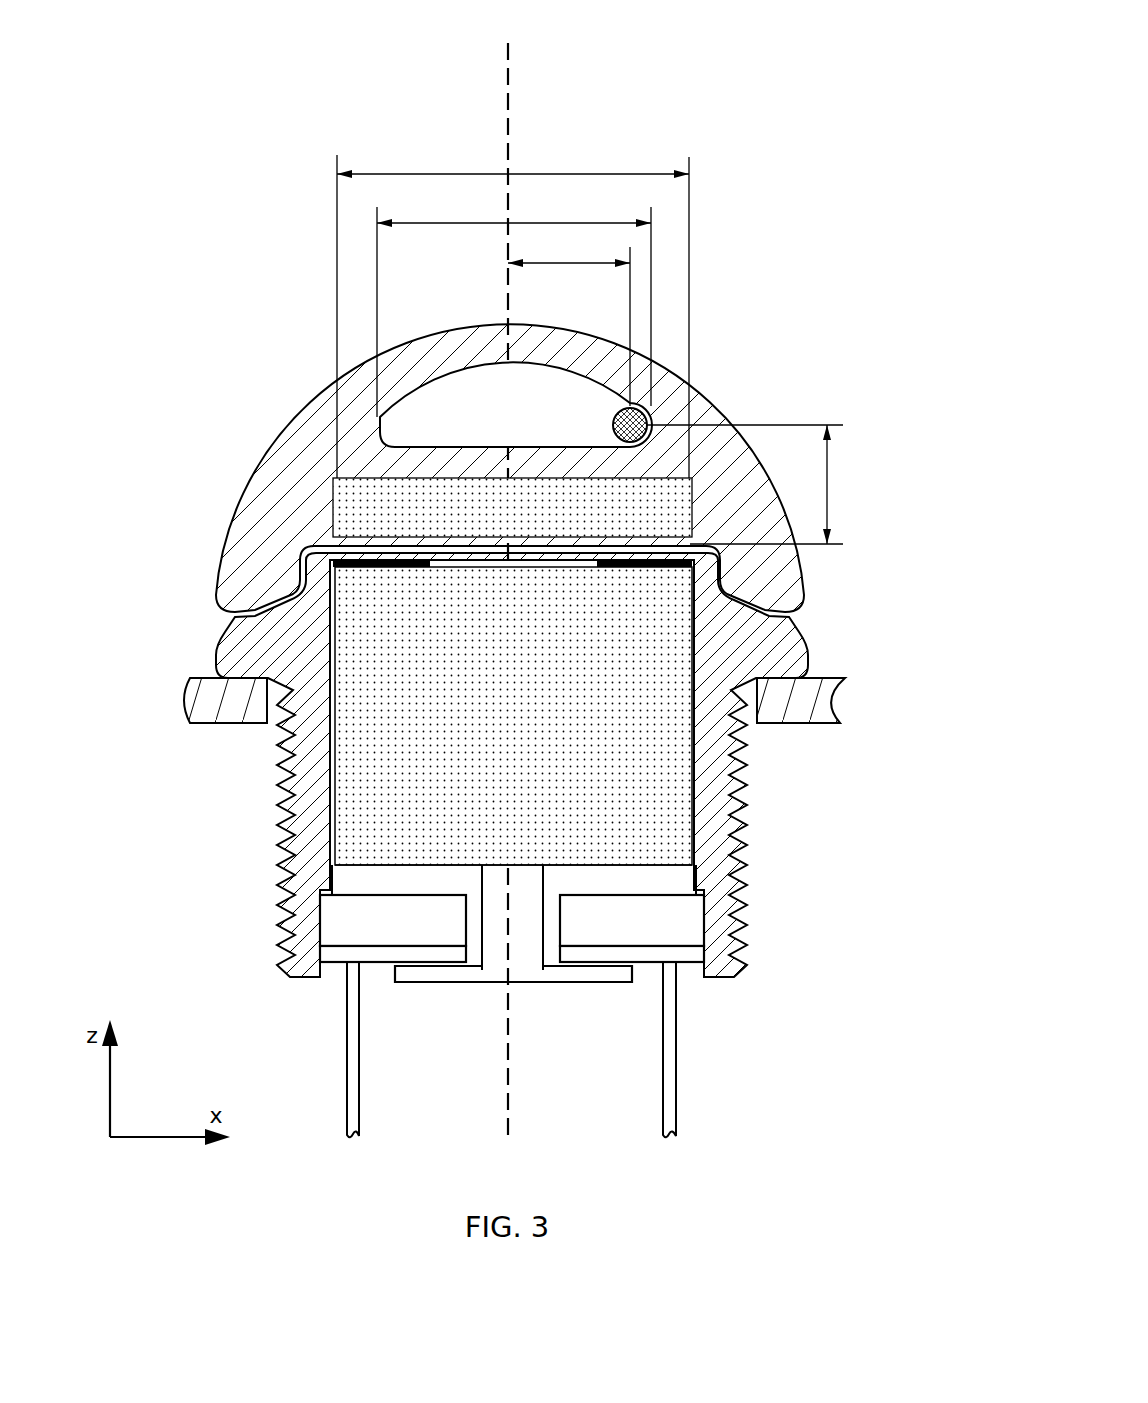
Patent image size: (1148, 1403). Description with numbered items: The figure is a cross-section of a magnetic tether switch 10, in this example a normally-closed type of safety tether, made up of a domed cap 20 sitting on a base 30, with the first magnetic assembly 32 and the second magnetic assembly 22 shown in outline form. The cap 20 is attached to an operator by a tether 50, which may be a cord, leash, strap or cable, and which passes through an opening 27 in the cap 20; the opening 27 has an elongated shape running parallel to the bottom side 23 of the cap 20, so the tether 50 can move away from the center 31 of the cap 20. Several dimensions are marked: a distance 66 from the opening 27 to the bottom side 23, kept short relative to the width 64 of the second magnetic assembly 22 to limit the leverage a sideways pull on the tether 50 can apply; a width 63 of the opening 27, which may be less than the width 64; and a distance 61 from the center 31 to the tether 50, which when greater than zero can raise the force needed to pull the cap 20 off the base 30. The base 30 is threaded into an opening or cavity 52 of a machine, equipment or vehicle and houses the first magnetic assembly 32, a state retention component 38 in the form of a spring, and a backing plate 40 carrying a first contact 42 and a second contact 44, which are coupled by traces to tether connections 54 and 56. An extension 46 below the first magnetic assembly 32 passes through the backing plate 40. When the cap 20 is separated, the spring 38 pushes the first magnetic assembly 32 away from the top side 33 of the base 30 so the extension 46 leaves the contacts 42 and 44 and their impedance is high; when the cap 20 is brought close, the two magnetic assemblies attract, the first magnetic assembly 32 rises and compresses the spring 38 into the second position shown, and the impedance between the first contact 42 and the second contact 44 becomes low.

The magnetic tether switch 10 is at (778, 165).
The cap 20 is at (728, 386).
The second magnetic assembly 22 is at (333, 490).
The bottom side of cap 23 is at (373, 568).
The opening 27 is at (507, 368).
The base 30 is at (812, 632).
The center of cap 31 is at (508, 75).
The first magnetic assembly 32 is at (665, 867).
The top side of base 33 is at (637, 510).
The state retention component 38 is at (387, 570).
The backing plate 40 is at (652, 965).
The first contact 42 is at (407, 968).
The second contact 44 is at (590, 968).
The extension 46 is at (528, 984).
The tether 50 is at (641, 405).
The opening or cavity 52 is at (256, 725).
The tether connection 54 is at (343, 1008).
The tether connection 56 is at (672, 1060).
The distance from center of cap to tether 61 is at (573, 262).
The width of opening 63 is at (437, 222).
The width of second magnetic assembly 64 is at (497, 172).
The distance from opening to bottom side of cap 66 is at (830, 491).